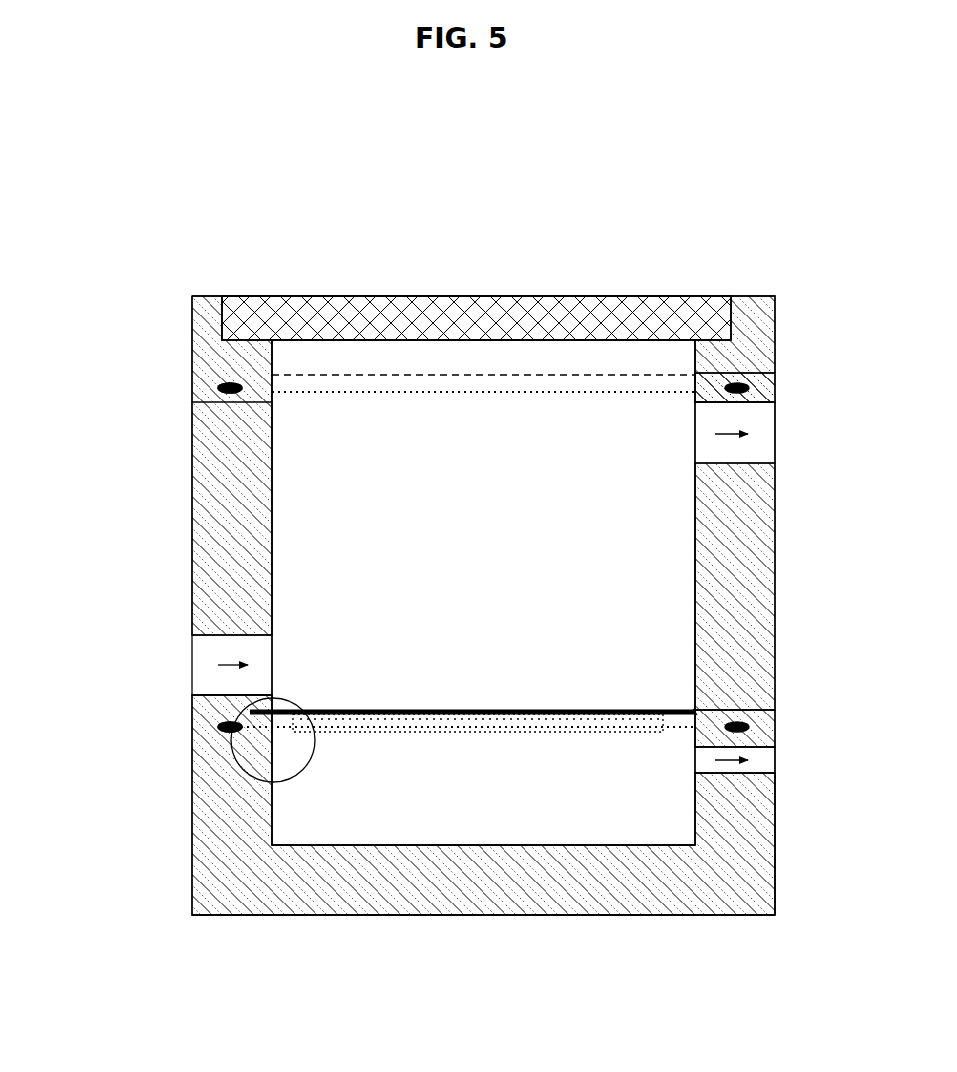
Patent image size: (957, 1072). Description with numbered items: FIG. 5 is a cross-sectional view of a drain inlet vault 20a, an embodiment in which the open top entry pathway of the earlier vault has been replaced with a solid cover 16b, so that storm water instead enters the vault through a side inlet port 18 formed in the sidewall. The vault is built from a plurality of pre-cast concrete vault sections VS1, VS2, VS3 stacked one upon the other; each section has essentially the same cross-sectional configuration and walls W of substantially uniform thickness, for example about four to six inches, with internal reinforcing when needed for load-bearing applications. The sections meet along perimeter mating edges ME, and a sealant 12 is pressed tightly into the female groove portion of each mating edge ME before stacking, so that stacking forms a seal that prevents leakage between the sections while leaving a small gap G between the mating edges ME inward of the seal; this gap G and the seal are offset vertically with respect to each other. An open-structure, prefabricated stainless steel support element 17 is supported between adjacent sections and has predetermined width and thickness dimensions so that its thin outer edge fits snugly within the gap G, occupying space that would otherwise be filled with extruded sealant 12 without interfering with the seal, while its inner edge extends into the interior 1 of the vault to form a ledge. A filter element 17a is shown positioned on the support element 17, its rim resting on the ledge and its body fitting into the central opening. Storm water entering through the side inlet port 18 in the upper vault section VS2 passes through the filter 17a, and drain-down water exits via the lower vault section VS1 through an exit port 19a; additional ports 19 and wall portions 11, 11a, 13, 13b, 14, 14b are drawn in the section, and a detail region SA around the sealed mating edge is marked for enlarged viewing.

The cavity / interior space 1 is at (478, 507).
The lower housing part 11 is at (273, 839).
The seal groove of lower housing part 11a is at (224, 716).
The sealant 12 is at (226, 392).
The upper housing part 13 is at (190, 322).
The upper housing insert piece 13b is at (750, 389).
The side housing part 14 is at (692, 636).
The side housing insert piece 14b is at (777, 730).
The cover plate 16b is at (392, 298).
The support element 17 is at (690, 718).
The filter 17a is at (478, 734).
The inlet opening 18 is at (178, 665).
The outlet opening 19 is at (695, 445).
The exit port 19a is at (777, 768).
The vault 20a is at (536, 921).
The gap G is at (692, 710).
The mating edge ME is at (215, 377).
The sealing area detail SA is at (314, 758).
The wall W is at (692, 350).
The lower vault section VS1 is at (232, 840).
The vault section VS2 is at (775, 352).
The sealing surface 3 VS3 is at (192, 536).